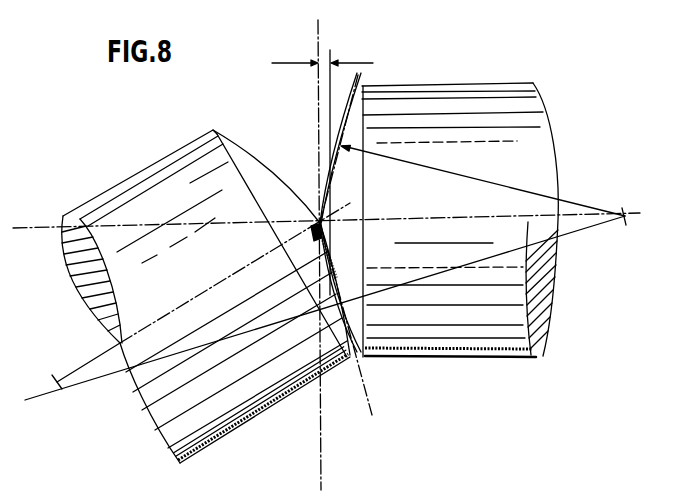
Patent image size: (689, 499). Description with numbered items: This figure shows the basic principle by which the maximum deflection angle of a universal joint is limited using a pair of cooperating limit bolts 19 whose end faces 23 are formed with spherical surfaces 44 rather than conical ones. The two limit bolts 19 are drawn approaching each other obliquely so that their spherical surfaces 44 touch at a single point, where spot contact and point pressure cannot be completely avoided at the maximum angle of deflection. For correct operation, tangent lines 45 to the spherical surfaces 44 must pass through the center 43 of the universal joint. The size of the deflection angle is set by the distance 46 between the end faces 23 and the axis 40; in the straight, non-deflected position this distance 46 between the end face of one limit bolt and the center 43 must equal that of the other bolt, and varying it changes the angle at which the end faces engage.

The limit bolt 19 is at (173, 190).
The end face 23 is at (265, 170).
The axis 40 is at (319, 34).
The center of the universal joint 43 is at (316, 228).
The spherical surface 44 is at (245, 167).
The tangent line 45 is at (358, 75).
The distance 46 is at (326, 62).